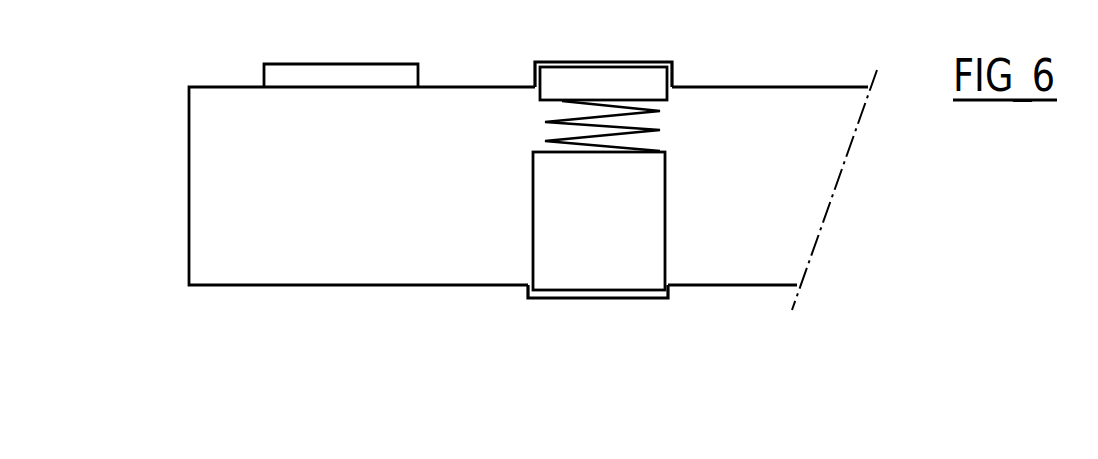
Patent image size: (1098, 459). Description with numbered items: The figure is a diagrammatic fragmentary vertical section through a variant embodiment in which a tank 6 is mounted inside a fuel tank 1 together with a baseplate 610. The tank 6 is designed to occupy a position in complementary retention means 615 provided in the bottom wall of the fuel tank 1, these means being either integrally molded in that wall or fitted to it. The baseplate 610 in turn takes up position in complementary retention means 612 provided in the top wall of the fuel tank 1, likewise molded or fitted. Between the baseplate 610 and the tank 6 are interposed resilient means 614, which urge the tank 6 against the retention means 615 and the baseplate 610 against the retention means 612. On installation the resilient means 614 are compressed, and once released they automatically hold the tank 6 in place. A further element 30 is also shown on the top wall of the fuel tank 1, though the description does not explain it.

The fuel tank 1 is at (188, 174).
The contact pad 30 is at (292, 77).
The complementary retention means 612 is at (560, 62).
The baseplate 610 is at (640, 78).
The resilient means 614 is at (565, 119).
The tank 6 is at (550, 232).
The complementary retention means 615 is at (623, 298).